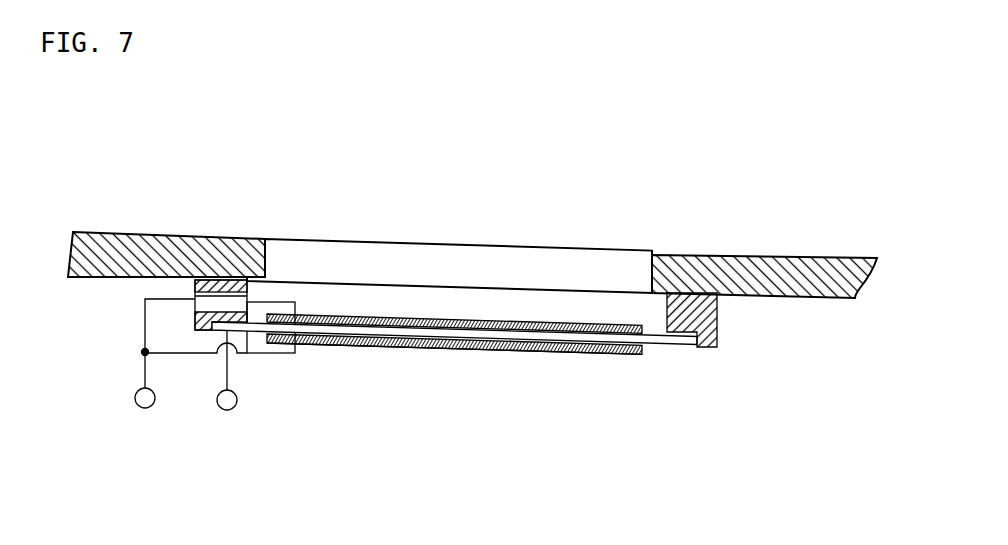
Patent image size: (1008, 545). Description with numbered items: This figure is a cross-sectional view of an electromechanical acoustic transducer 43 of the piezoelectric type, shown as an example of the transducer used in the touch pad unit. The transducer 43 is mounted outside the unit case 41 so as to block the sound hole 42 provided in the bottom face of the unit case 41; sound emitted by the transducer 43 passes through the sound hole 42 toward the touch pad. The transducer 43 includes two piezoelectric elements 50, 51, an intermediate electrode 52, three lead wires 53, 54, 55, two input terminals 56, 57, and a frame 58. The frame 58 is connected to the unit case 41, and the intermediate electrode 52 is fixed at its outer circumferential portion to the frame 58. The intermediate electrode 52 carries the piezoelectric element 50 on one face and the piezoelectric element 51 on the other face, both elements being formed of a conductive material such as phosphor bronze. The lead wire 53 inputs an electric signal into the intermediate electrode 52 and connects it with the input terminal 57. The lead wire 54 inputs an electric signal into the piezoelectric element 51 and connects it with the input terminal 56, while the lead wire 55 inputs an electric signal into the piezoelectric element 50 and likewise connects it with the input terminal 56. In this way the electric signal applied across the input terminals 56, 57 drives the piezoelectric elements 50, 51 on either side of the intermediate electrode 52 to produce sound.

The unit case 41 is at (760, 255).
The sound hole 42 is at (512, 272).
The electromechanical acoustic transducer 43 is at (550, 363).
The piezoelectric element 50 is at (403, 317).
The piezoelectric element 51 is at (410, 347).
The intermediate electrode 52 is at (657, 347).
The lead wire 53 is at (230, 367).
The lead wire 54 is at (292, 355).
The lead wire 55 is at (277, 297).
The input terminal 56 is at (148, 408).
The input terminal 57 is at (230, 410).
The frame 58 is at (718, 333).